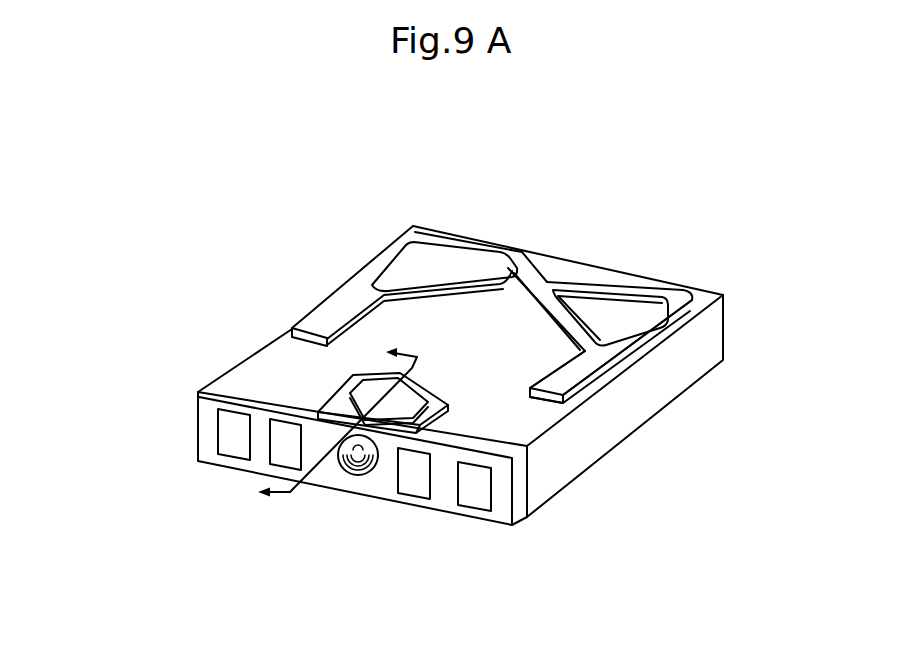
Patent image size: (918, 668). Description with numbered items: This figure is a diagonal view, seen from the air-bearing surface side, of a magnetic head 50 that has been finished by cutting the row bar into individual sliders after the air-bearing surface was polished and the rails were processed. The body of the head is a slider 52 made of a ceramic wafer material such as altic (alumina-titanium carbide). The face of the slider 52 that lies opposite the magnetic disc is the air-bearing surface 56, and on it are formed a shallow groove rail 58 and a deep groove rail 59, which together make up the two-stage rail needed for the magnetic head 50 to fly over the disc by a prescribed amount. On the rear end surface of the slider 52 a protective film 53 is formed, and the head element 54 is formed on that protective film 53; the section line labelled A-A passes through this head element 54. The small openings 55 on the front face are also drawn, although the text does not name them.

The magnetic head 50 is at (320, 250).
The slider 52 is at (573, 460).
The protective film 53 is at (520, 512).
The head element 54 is at (359, 478).
The contact openings 55 is at (412, 488).
The air-bearing surface 56 is at (458, 260).
The shallow groove rail 58 is at (585, 363).
The deep groove rail 59 is at (273, 360).